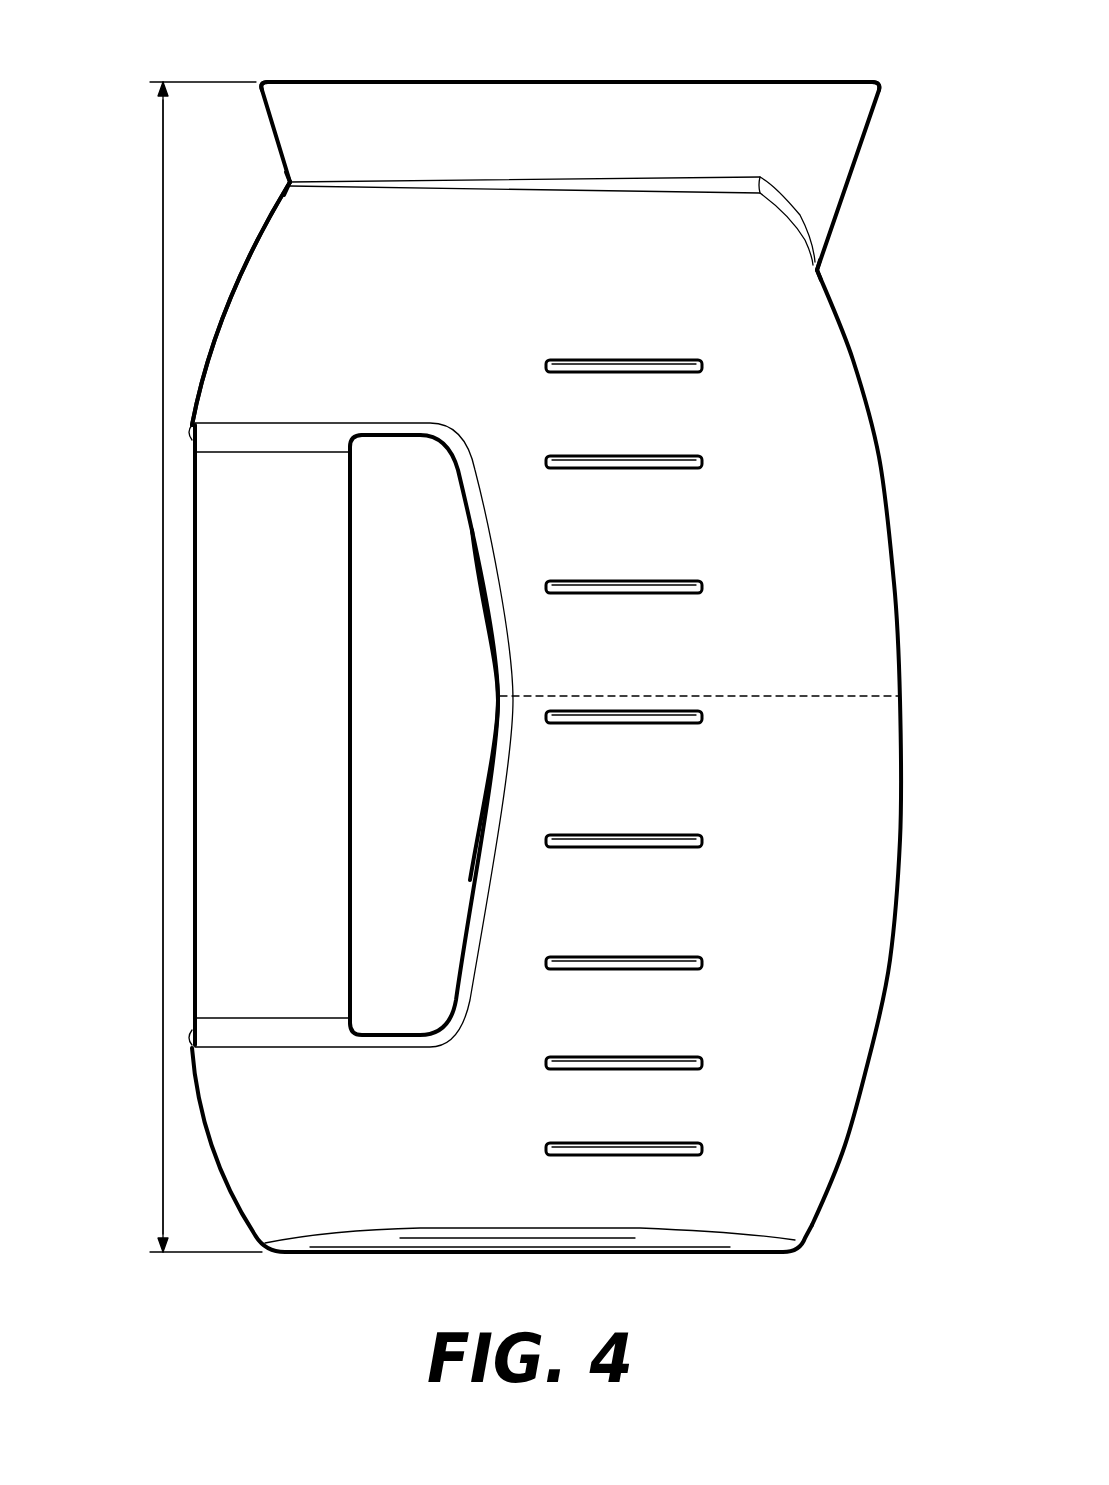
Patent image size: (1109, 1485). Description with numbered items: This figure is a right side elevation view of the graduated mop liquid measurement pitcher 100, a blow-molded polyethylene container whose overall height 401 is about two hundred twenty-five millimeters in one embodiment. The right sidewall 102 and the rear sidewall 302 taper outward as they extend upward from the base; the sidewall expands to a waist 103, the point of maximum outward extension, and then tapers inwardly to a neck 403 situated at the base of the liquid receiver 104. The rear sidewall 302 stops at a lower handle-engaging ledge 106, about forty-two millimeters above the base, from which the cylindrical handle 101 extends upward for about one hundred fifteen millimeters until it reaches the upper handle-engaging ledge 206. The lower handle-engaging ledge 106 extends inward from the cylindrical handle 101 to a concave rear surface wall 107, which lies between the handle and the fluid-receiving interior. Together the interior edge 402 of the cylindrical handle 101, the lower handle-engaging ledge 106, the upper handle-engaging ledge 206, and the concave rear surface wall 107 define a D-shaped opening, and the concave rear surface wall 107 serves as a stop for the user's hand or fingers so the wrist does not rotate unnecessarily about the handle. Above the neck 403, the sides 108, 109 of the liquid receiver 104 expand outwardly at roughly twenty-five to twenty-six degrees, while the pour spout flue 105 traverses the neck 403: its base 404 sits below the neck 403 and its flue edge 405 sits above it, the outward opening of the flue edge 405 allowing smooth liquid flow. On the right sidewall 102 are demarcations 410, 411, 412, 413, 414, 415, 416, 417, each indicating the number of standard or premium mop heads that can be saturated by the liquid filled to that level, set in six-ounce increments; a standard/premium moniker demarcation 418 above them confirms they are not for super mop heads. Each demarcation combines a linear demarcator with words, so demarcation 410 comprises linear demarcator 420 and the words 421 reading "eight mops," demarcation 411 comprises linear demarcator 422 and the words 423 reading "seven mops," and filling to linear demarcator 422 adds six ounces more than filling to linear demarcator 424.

The graduated mop liquid measurement pitcher 100 is at (128, 237).
The cylindrical handle 101 is at (215, 795).
The right sidewall 102 is at (588, 783).
The waist 103 is at (655, 692).
The liquid receiver 104 is at (423, 72).
The pour spout flue 105 is at (833, 67).
The lower handle-engaging ledge 106 is at (378, 1033).
The concave rear surface wall 107 is at (498, 725).
The side of liquid receiver 108 is at (535, 125).
The side of liquid receiver 109 is at (260, 112).
The upper handle-engaging ledge 206 is at (388, 437).
The rear sidewall 302 is at (227, 305).
The height 401 is at (163, 188).
The interior edge 402 is at (355, 668).
The neck 403 is at (275, 182).
The base of pour spout flue 404 is at (832, 270).
The flue edge 405 is at (887, 88).
The demarcation 410 is at (816, 360).
The demarcation 411 is at (811, 457).
The demarcation 412 is at (824, 583).
The demarcation 413 is at (820, 713).
The demarcation 414 is at (815, 840).
The demarcation 415 is at (815, 960).
The demarcation 416 is at (823, 1062).
The demarcation 417 is at (822, 1145).
The standard/premium moniker demarcation 418 is at (403, 253).
The linear demarcator 420 is at (620, 360).
The words 421 is at (748, 355).
The linear demarcator 422 is at (620, 456).
The words 423 is at (757, 440).
The linear demarcator 424 is at (625, 585).